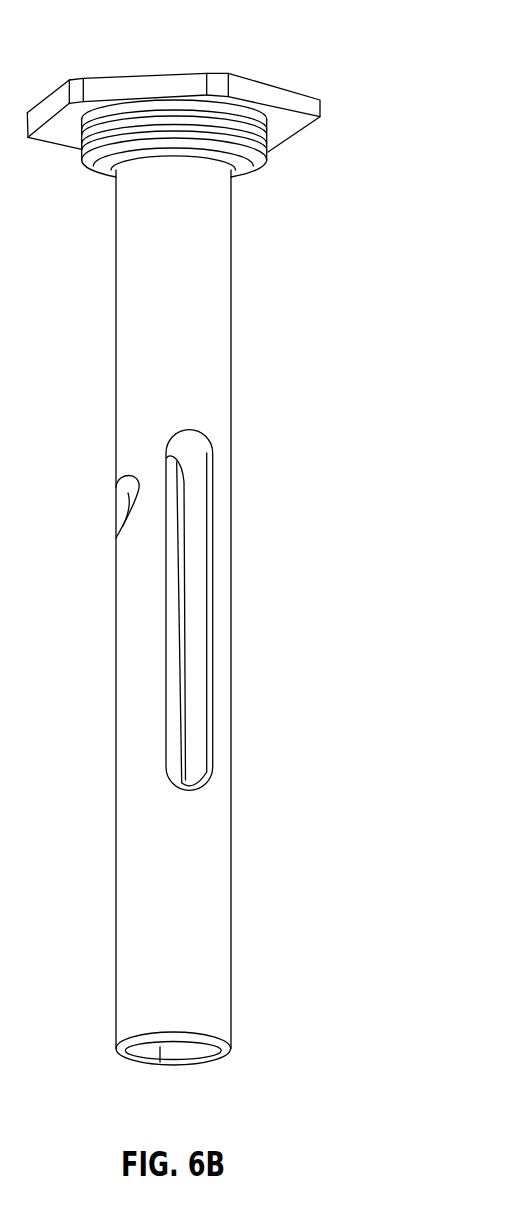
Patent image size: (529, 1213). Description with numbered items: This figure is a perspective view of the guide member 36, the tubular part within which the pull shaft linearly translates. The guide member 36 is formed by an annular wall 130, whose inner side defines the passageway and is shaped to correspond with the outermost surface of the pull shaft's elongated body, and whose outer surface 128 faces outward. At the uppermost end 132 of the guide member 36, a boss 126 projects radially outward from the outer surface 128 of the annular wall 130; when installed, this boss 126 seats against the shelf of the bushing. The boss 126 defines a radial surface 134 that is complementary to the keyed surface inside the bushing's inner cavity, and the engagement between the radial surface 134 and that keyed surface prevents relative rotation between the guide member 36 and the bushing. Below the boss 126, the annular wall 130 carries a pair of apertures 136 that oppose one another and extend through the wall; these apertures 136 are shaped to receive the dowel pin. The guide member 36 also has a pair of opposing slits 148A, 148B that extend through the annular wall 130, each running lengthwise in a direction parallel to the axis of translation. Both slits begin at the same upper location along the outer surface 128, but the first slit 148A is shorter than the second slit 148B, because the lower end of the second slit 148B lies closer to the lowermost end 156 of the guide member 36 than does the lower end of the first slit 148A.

The guide member 36 is at (190, 640).
The boss 126 is at (180, 73).
The outer surface 128 is at (203, 382).
The annular wall 130 is at (197, 248).
The uppermost end 132 is at (259, 64).
The radial surface 134 is at (297, 103).
The apertures 136 is at (115, 485).
The first slit 148A is at (213, 530).
The second slit 148B is at (182, 650).
The lowermost end 156 is at (209, 1071).